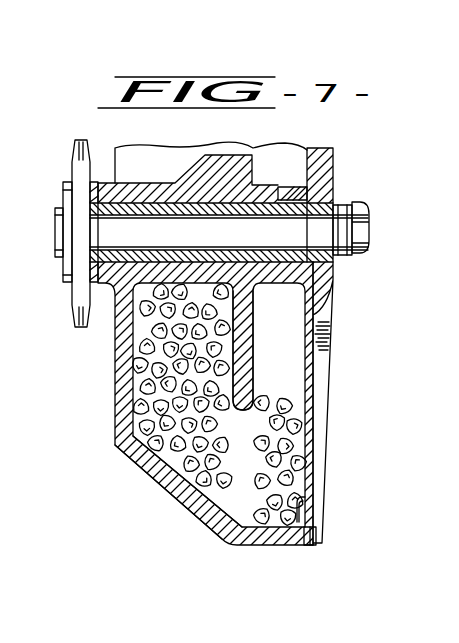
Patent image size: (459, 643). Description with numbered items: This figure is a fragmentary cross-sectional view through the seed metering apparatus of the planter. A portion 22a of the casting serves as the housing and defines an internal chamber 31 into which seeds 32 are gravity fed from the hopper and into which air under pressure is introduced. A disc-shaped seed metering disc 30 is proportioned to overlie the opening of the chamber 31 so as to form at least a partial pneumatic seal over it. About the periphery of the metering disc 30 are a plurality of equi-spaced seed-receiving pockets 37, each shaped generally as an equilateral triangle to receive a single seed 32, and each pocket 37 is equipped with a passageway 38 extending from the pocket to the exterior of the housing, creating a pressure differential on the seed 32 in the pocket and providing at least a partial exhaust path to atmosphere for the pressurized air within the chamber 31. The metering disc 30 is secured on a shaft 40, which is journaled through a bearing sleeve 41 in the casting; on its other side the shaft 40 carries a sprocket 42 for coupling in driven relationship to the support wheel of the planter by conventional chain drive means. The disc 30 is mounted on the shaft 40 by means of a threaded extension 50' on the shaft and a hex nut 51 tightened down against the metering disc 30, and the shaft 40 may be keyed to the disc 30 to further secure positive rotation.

The portion of casting 22a is at (179, 503).
The seed metering disc 30 is at (325, 368).
The internal chamber 31 is at (292, 379).
The seeds 32 is at (163, 473).
The seed-receiving pockets 37 is at (305, 520).
The passageway 38 is at (311, 545).
The shaft 40 is at (105, 228).
The bearing sleeve 41 is at (115, 207).
The sprocket 42 is at (83, 258).
The bolt head 50' is at (358, 201).
The hex nut 51 is at (341, 252).